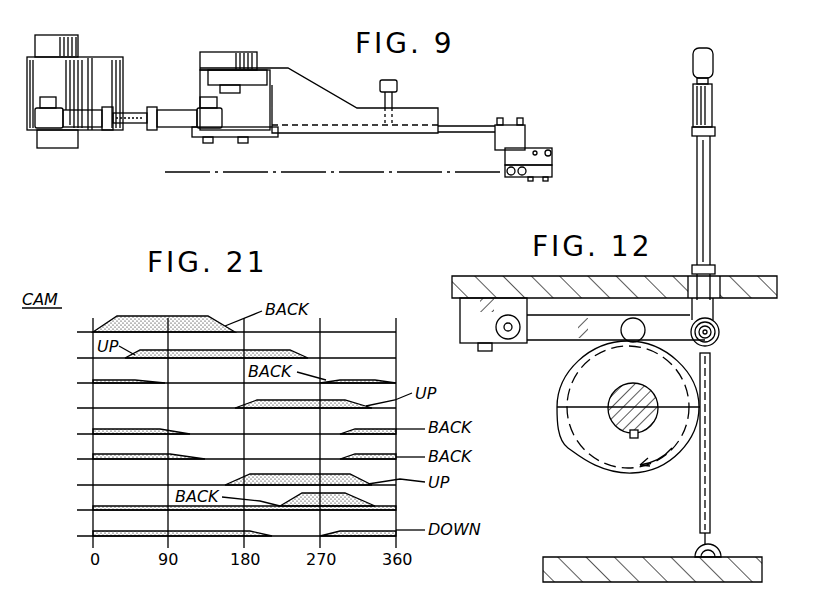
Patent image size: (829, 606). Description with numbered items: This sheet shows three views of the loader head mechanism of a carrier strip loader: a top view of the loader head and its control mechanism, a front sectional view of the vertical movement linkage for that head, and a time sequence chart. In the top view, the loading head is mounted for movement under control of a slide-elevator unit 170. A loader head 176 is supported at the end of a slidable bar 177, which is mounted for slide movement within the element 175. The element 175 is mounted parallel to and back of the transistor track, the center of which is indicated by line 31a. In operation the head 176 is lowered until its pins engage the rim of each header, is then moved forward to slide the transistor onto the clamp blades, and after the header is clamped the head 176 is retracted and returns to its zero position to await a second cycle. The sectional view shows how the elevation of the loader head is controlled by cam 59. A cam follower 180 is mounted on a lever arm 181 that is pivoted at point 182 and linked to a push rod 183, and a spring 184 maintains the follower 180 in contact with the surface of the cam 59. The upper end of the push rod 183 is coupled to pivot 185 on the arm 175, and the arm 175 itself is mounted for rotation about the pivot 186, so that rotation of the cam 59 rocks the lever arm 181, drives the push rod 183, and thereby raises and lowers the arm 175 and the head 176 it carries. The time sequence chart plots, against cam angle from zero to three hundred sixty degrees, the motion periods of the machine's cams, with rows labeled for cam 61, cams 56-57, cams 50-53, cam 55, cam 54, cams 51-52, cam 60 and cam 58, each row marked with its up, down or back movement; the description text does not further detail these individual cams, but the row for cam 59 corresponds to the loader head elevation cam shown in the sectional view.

In FIG. 9, the slide-elevator unit 170 is at (243, 40).
In FIG. 9, the pivot 186 is at (200, 90).
In FIG. 9, the element (arm) 175 is at (300, 82).
In FIG. 12, the element (arm) 175 is at (746, 602).
In FIG. 9, the pivot 185 is at (397, 88).
In FIG. 9, the slidable bar 177 is at (464, 123).
In FIG. 9, the loader head 176 is at (541, 178).
In FIG. 9, the line (center of track) 31a is at (300, 172).
In FIG. 12, the push rod 183 is at (712, 177).
In FIG. 12, the cam follower 180 is at (640, 321).
In FIG. 12, the pivot point 182 is at (511, 341).
In FIG. 12, the lever arm 181 is at (558, 341).
In FIG. 12, the cam 59 is at (563, 440).
In FIG. 21, the cam 59 is at (220, 357).
In FIG. 12, the spring 184 is at (710, 451).
In FIG. 21, the cam 61 is at (220, 328).
In FIG. 21, the cams 56-57 is at (208, 382).
In FIG. 21, the cams 50-53 is at (208, 407).
In FIG. 21, the cam 55 is at (220, 433).
In FIG. 21, the cam 54 is at (220, 458).
In FIG. 21, the cams 51-52 is at (208, 483).
In FIG. 21, the cam 60 is at (220, 505).
In FIG. 21, the cam 58 is at (220, 535).